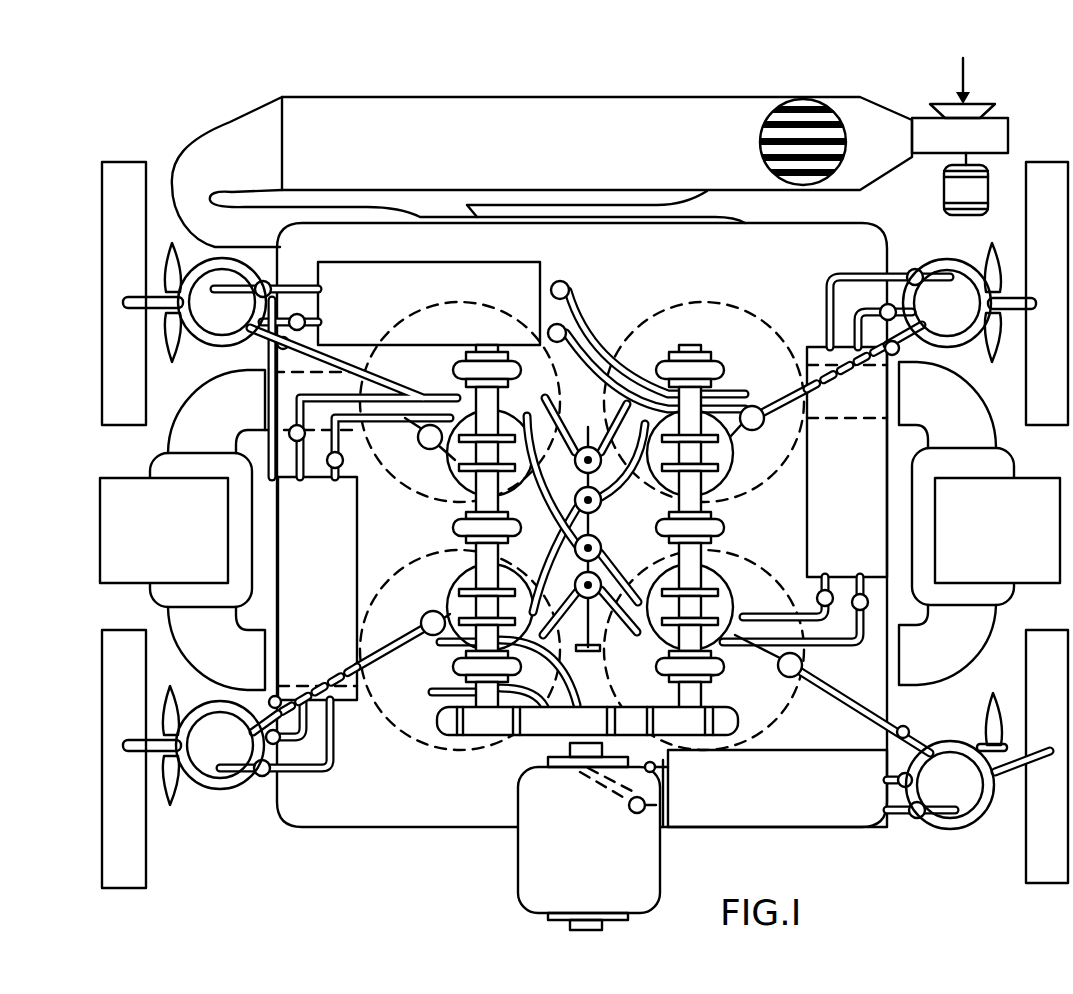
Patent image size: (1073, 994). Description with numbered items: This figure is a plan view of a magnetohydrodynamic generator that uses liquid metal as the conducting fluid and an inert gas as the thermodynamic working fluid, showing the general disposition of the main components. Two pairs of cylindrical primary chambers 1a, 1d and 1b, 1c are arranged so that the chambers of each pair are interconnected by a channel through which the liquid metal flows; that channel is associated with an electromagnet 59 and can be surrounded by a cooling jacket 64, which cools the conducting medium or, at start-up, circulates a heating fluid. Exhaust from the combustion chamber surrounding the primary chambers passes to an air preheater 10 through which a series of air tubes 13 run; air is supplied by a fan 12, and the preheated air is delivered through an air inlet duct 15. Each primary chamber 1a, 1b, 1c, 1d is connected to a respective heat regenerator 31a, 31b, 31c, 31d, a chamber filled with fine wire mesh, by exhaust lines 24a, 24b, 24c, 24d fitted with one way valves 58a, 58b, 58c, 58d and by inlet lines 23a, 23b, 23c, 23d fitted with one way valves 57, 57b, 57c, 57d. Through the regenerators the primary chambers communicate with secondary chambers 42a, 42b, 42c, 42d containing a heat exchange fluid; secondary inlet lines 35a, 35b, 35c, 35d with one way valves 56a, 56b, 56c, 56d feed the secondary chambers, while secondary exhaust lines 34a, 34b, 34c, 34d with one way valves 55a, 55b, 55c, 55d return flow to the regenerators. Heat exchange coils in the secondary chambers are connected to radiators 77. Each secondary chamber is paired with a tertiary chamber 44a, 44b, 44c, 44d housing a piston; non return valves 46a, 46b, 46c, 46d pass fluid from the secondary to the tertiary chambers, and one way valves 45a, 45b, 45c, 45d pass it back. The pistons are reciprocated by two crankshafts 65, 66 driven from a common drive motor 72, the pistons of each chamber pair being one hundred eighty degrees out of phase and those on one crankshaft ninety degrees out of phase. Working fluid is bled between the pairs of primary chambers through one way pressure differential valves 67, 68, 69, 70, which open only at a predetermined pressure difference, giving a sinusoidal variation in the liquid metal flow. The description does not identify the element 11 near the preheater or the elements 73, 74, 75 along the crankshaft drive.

The primary chamber 1a is at (460, 402).
The primary chamber 1b is at (704, 402).
The primary chamber 1c is at (704, 650).
The primary chamber 1d is at (460, 650).
The air preheater 10 is at (597, 157).
The throttle valve 11 is at (785, 105).
The fan 12 is at (960, 136).
The air tubes 13 is at (772, 124).
The air inlet duct 15 is at (458, 172).
The inlet line 23a is at (430, 397).
The inlet line 23b is at (618, 372).
The inlet line 23c is at (810, 643).
The inlet line 23d is at (455, 644).
The exhaust line 24a is at (375, 419).
The exhaust line 24b is at (592, 320).
The exhaust line 24c is at (800, 617).
The exhaust line 24d is at (448, 694).
The heat regenerator 31a is at (317, 588).
The heat regenerator 31b is at (429, 303).
The heat regenerator 31c is at (847, 462).
The heat regenerator 31d is at (777, 788).
The secondary exhaust line 34a is at (293, 770).
The secondary exhaust line 34b is at (236, 288).
The secondary exhaust line 34c is at (833, 276).
The secondary exhaust line 34d is at (900, 815).
The secondary inlet line 35a is at (308, 722).
The secondary inlet line 35b is at (308, 322).
The secondary inlet line 35c is at (860, 315).
The secondary inlet line 35d is at (890, 779).
The secondary chamber 42a is at (193, 745).
The secondary chamber 42b is at (194, 302).
The secondary chamber 42c is at (969, 302).
The secondary chamber 42d is at (978, 761).
The tertiary chamber 44a is at (452, 587).
The tertiary chamber 44b is at (460, 470).
The tertiary chamber 44c is at (732, 463).
The tertiary chamber 44d is at (728, 582).
The one way valve 45a is at (421, 620).
The one way valve 45b is at (427, 443).
The one way valve 45c is at (763, 422).
The one way valve 45d is at (778, 666).
The non return valve 46a is at (268, 701).
The non return valve 46b is at (280, 345).
The non return valve 46c is at (899, 349).
The non return valve 46d is at (908, 730).
The one way valve 55a is at (255, 766).
The one way valve 55b is at (268, 283).
The one way valve 55c is at (913, 269).
The one way valve 55d is at (919, 820).
The one way valve 56a is at (278, 742).
The one way valve 56b is at (290, 310).
The one way valve 56c is at (870, 303).
The one way valve 56d is at (897, 783).
The one way valve 57 is at (289, 436).
The one way valve 57b is at (600, 340).
The one way valve 57c is at (868, 603).
The one way valve 57d is at (672, 770).
The one way valve 58a is at (341, 465).
The one way valve 58b is at (561, 281).
The one way valve 58c is at (818, 592).
The one way valve 58d is at (636, 814).
The electromagnet 59 is at (580, 527).
The cooling jacket 64 is at (582, 526).
The crankshaft 65 is at (474, 550).
The crankshaft 66 is at (690, 526).
The one way pressure differential valve 67 is at (582, 509).
The one way pressure differential valve 68 is at (590, 600).
The one way pressure differential valve 69 is at (589, 518).
The one way pressure differential valve 70 is at (586, 435).
The common drive motor 72 is at (590, 836).
The collector section 73 is at (487, 722).
The collector 74 is at (587, 721).
The collector section 75 is at (690, 722).
The radiators 77 is at (585, 525).